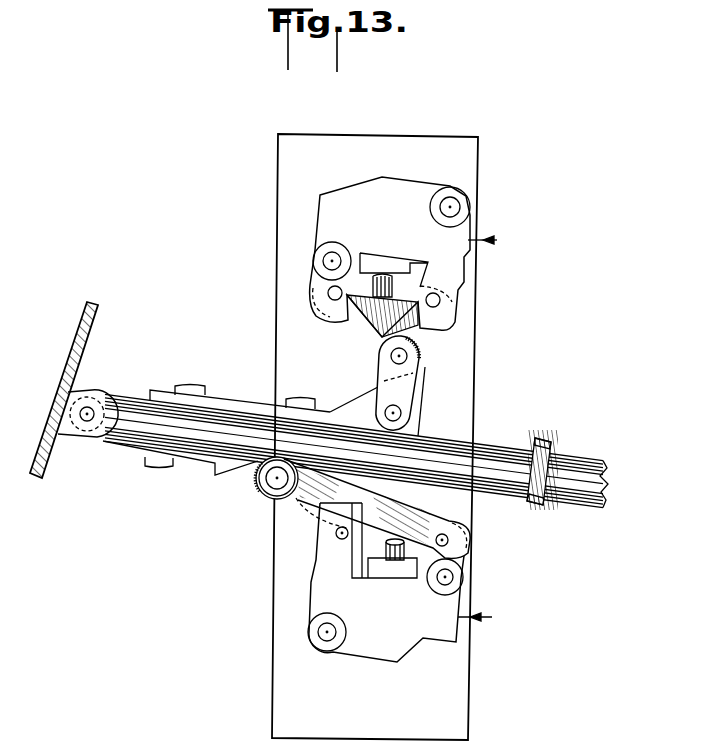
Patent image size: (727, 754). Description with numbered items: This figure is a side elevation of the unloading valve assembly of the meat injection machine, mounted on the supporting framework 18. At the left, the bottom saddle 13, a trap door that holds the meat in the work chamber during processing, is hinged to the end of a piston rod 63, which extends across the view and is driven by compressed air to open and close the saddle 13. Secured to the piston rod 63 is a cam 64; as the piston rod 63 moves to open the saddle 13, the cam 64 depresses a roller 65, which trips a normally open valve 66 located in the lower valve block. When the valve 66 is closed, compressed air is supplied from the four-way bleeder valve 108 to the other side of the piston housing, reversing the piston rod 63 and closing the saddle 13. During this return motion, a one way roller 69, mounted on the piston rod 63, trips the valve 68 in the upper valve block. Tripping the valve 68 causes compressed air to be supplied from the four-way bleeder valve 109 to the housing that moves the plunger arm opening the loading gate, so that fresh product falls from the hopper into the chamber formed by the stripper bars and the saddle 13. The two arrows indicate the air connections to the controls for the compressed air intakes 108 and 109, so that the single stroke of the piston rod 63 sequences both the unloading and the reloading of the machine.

The saddle 13 is at (80, 314).
The supporting framework 18 is at (458, 668).
The piston rod 63 is at (228, 427).
The cam 64 is at (217, 474).
The roller 65 is at (263, 500).
The normally open valve 66 is at (462, 547).
The valve 68 is at (397, 313).
The one way roller 69 is at (421, 357).
The four-way bleeder valve 108 is at (569, 608).
The four-way bleeder valve 109 is at (572, 235).